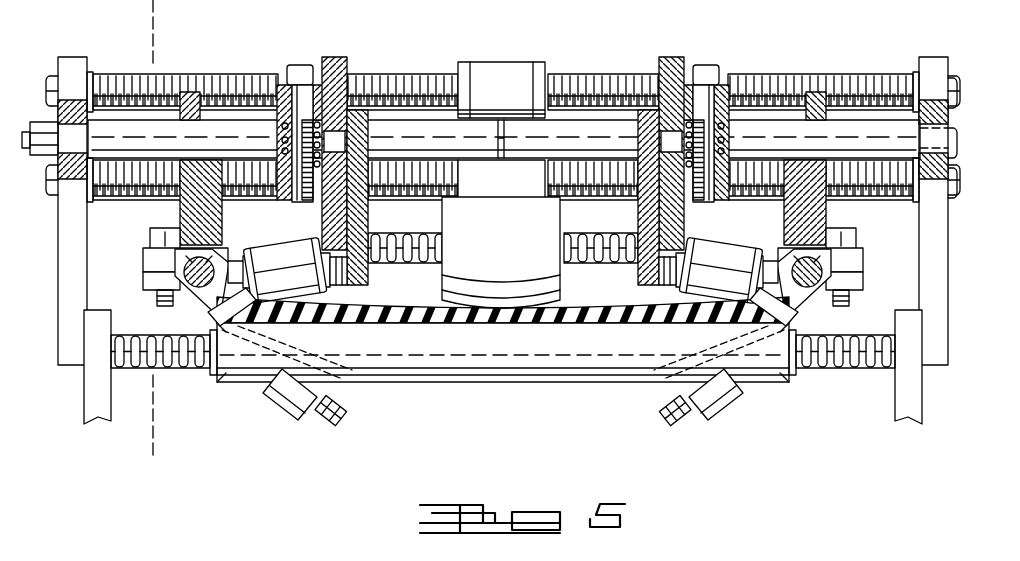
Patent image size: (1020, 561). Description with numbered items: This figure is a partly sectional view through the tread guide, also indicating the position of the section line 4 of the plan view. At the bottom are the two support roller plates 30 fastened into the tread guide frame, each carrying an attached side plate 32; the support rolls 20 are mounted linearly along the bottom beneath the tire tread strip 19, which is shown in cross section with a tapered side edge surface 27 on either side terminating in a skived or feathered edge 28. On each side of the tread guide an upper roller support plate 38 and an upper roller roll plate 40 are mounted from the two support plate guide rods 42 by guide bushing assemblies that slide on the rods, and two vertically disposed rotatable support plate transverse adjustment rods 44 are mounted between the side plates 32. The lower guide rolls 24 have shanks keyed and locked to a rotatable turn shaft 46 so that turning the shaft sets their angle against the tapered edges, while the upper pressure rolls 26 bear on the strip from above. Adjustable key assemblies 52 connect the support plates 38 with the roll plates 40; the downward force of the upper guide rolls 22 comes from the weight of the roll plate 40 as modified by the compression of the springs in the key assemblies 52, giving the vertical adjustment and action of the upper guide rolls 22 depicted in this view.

The line 4— 4 is at (143, 5).
The tire tread strip 19 is at (392, 278).
The support rolls 20 is at (449, 382).
The upper guide rolls 22 is at (503, 256).
The lower guide rolls 24 is at (290, 401).
The upper pressure rolls 26 is at (518, 262).
The tapered side edge surface 27 is at (299, 332).
The skived or feathered edge 28 is at (262, 222).
The support roller plates 30 is at (88, 391).
The side plate 32 is at (70, 262).
The upper roller support plate 38 is at (335, 60).
The upper roller roll plate 40 is at (367, 206).
The support plate guide rods 42 is at (767, 128).
The support plate transverse adjustment rods 44 is at (150, 200).
The rotatable turn shaft 46 is at (198, 283).
The adjustable key assemblies 52 is at (297, 70).